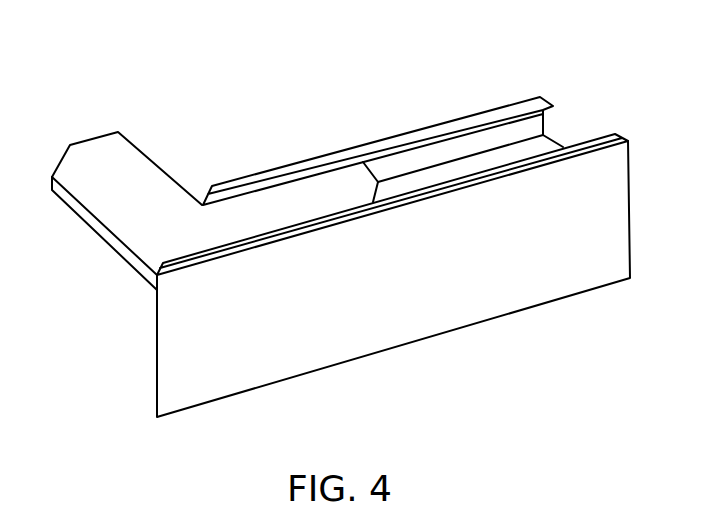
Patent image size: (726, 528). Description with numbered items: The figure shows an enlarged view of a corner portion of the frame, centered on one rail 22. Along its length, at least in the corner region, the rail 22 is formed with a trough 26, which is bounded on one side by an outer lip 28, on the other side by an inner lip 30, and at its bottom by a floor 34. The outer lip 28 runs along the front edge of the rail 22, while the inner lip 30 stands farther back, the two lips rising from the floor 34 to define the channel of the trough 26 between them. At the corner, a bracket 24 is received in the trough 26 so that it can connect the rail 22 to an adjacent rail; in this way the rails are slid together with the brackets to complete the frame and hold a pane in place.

The rail 22 is at (611, 229).
The bracket 24 is at (93, 177).
The trough 26 is at (565, 133).
The outer lip 28 is at (617, 133).
The inner lip 30 is at (502, 117).
The floor 34 is at (422, 178).